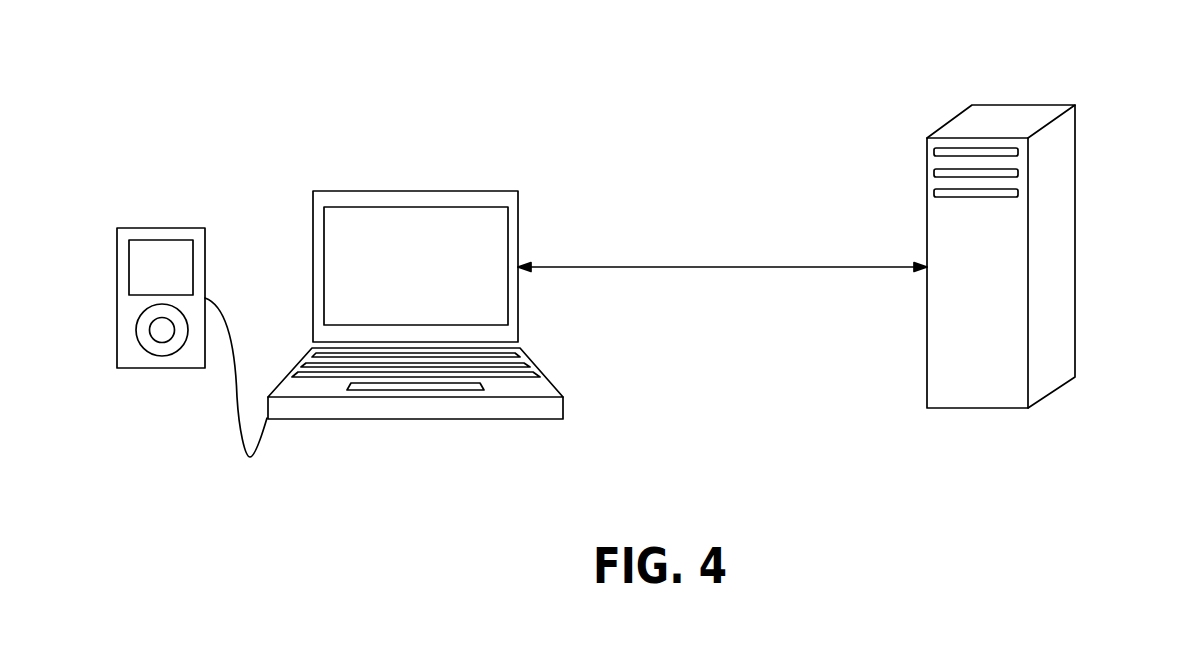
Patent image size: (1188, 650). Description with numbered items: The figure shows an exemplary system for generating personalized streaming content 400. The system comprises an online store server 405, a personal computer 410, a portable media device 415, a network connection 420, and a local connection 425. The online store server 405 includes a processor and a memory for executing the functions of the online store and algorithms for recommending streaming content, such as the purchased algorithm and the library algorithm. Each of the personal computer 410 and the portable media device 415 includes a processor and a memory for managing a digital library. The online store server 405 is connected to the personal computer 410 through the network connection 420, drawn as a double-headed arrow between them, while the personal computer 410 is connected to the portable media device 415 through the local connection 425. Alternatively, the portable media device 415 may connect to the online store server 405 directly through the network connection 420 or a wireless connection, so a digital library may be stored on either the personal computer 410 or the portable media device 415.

The system for generating personalized streaming content 400 is at (653, 40).
The online store server 405 is at (1075, 103).
The personal computer 410 is at (414, 190).
The portable media device 415 is at (160, 226).
The network connection 420 is at (702, 266).
The local connection 425 is at (235, 402).